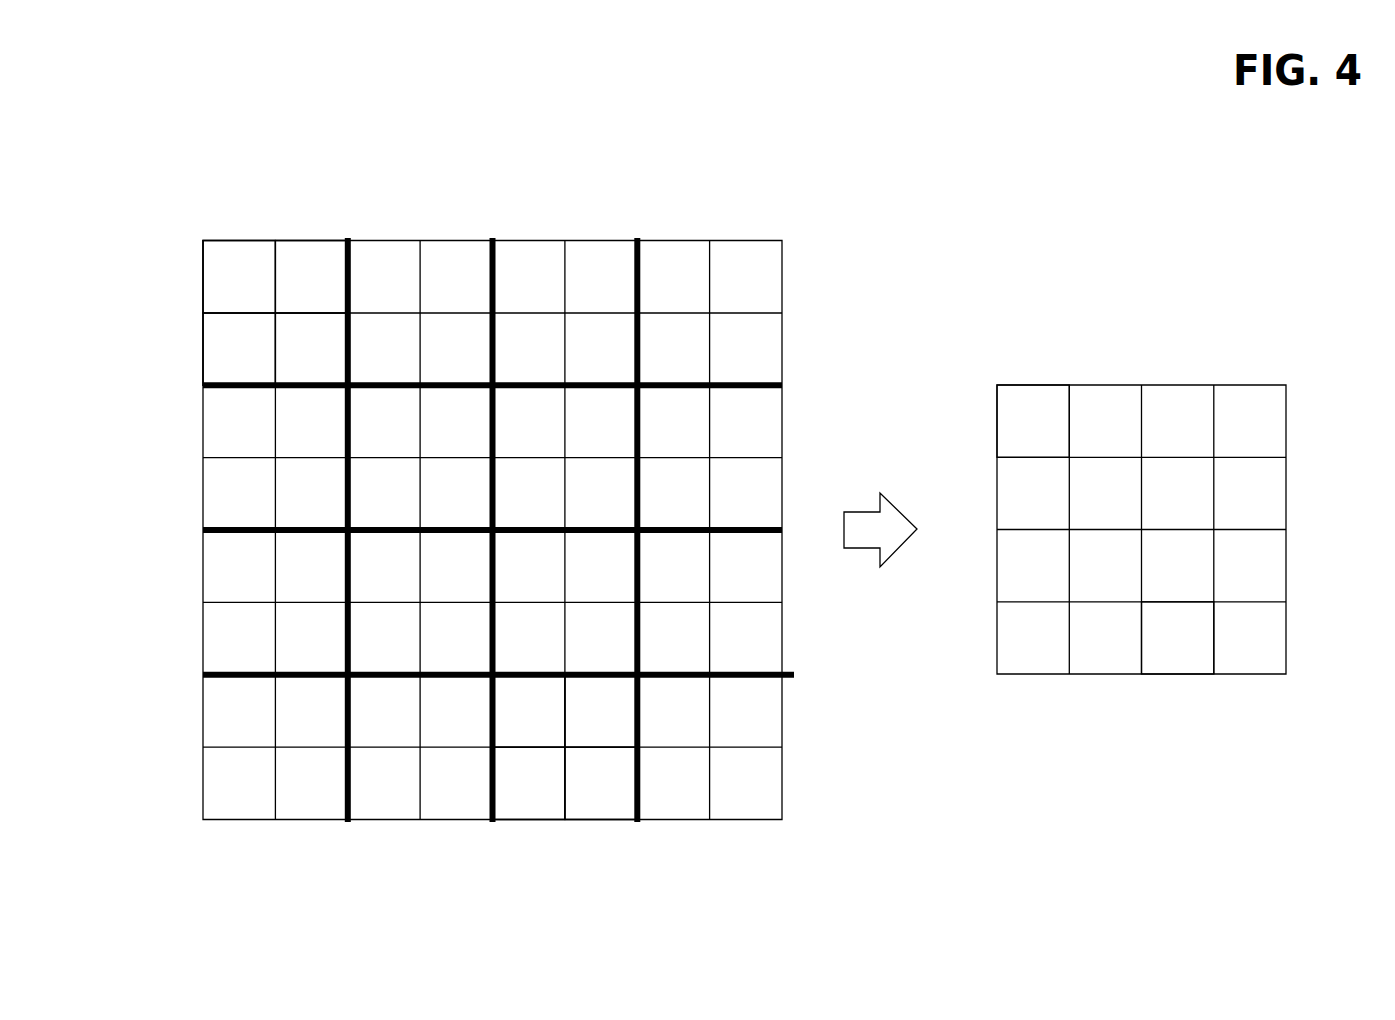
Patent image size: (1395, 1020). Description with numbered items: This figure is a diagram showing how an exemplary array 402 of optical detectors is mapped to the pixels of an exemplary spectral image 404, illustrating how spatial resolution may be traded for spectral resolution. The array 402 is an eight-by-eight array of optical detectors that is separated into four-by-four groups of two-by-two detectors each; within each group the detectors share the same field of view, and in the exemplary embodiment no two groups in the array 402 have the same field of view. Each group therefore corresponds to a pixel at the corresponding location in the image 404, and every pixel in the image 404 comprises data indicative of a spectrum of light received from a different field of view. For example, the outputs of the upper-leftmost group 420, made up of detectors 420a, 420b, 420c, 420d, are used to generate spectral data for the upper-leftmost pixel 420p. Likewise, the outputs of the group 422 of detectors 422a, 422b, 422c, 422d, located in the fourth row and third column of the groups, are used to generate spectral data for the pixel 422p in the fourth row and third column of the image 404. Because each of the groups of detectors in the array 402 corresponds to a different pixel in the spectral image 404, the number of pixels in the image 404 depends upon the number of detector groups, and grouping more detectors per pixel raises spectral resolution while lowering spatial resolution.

The array of optical detectors 402 is at (528, 168).
The spectral image 404 is at (1178, 329).
The upper-leftmost group of detectors 420 is at (265, 240).
The detector 420a is at (239, 277).
The detector 420b is at (311, 277).
The detector 420c is at (239, 349).
The detector 420d is at (311, 349).
The group of detectors 422 is at (574, 822).
The detector 422a is at (529, 711).
The detector 422b is at (601, 711).
The detector 422c is at (529, 783).
The detector 422d is at (601, 783).
The upper-leftmost pixel 420p is at (1033, 421).
The pixel 422p is at (1178, 638).